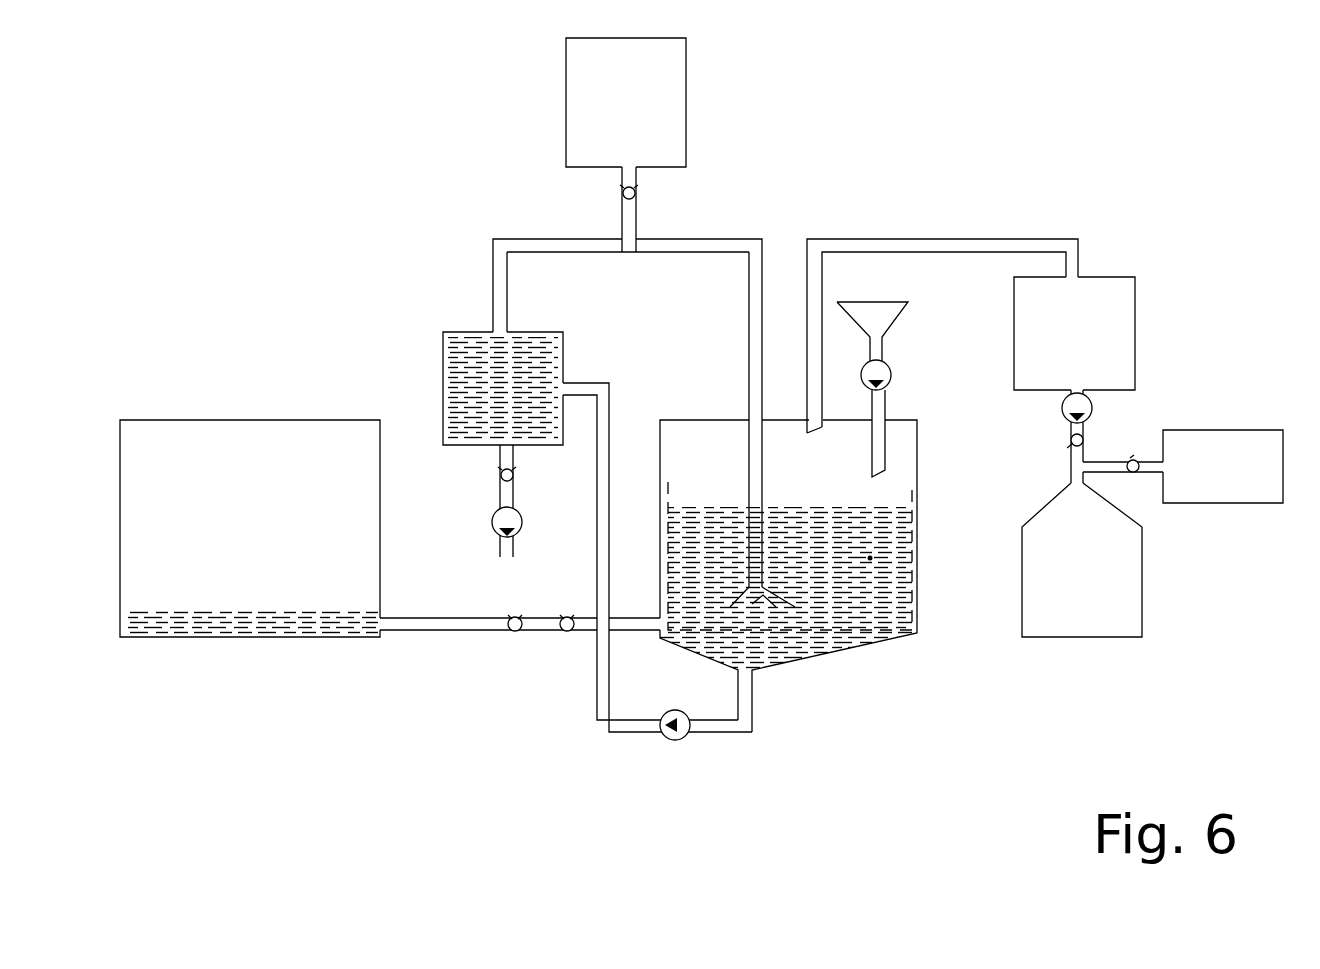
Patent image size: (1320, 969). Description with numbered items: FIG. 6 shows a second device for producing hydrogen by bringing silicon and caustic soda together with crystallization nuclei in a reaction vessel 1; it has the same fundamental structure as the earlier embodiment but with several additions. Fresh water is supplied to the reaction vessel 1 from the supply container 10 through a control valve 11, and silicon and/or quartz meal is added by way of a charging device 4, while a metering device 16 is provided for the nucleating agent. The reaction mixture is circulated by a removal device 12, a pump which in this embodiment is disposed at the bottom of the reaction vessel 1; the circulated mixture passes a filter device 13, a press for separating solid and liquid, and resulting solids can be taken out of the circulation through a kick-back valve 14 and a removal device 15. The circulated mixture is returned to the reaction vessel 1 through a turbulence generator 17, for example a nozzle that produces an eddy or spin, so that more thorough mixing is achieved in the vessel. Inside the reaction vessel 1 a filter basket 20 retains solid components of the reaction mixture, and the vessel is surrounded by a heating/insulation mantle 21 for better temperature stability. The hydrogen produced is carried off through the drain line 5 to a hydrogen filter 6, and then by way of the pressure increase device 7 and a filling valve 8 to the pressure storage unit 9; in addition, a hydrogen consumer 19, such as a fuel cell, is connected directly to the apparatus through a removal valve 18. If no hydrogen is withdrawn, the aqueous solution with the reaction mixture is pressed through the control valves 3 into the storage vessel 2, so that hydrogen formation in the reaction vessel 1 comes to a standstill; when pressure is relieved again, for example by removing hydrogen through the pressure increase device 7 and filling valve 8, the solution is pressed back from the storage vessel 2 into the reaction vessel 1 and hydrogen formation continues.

The reaction vessel 1 is at (823, 657).
The storage vessel 2 is at (272, 637).
The control valves 3 is at (515, 631).
The charging device 4 is at (855, 300).
The drain line 5 is at (1057, 238).
The hydrogen filter 6 is at (1107, 275).
The pressure increase device 7 is at (1092, 407).
The filling valve 8 is at (1088, 442).
The pressure storage unit 9 is at (1098, 637).
The supply container for fresh water 10 is at (686, 148).
The control valve for fresh water feed 11 is at (633, 192).
The removal device 12 is at (688, 743).
The filter device 13 is at (458, 332).
The kick-back valve 14 is at (493, 473).
The removal device for solid 15 is at (493, 518).
The metering device for nucleating agent 16 is at (890, 360).
The turbulence generator 17 is at (752, 602).
The removal valve for hydrogen 18 is at (1137, 473).
The hydrogen consumer 19 is at (1260, 503).
The filter basket 20 is at (870, 630).
The heating/insulation mantle 21 is at (870, 558).